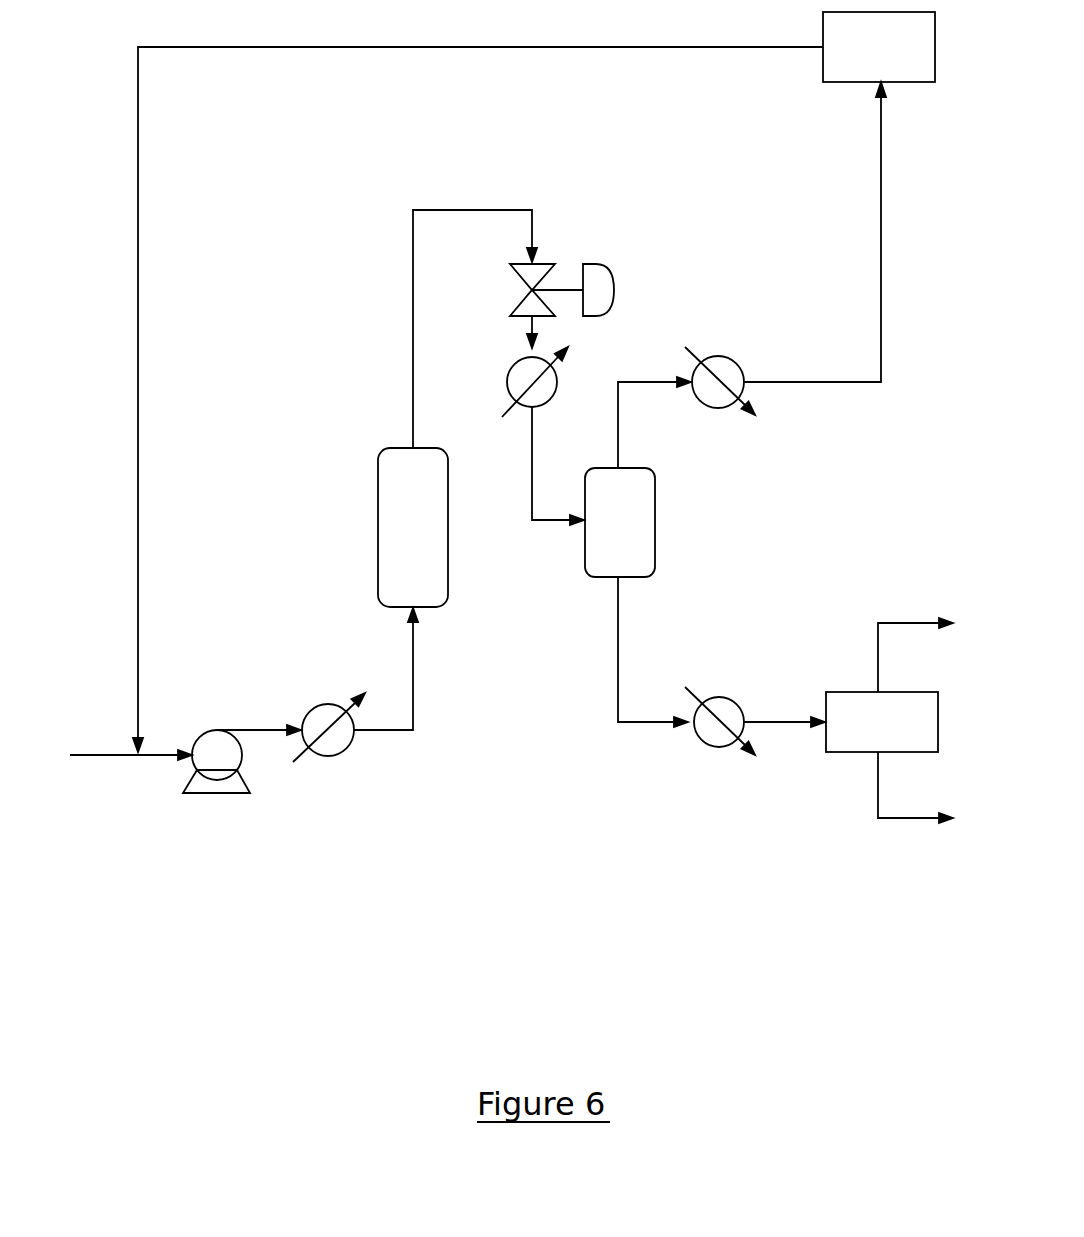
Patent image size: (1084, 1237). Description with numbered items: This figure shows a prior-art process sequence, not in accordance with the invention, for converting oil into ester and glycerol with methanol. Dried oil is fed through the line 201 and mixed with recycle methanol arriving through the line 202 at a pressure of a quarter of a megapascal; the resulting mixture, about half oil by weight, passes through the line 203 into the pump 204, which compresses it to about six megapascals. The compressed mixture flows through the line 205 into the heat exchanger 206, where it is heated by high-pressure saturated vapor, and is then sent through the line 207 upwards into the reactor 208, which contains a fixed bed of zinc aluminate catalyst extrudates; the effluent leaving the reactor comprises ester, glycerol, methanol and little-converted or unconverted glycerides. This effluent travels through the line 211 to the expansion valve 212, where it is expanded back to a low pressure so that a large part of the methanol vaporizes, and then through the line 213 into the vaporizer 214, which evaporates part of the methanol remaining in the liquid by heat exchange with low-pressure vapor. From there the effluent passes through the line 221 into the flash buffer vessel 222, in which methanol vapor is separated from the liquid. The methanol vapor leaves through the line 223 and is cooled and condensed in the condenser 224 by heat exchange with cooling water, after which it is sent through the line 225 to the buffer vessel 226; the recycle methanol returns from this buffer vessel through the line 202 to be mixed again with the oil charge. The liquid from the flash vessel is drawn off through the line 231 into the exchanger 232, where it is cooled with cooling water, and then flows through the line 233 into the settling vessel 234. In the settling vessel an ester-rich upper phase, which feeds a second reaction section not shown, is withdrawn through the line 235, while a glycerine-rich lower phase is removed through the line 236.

The line 201 is at (99, 762).
The line 202 is at (138, 415).
The line 203 is at (157, 762).
The pump 204 is at (216, 796).
The line 205 is at (263, 728).
The heat exchanger 206 is at (327, 760).
The line 207 is at (389, 736).
The reactor 208 is at (378, 557).
The line 211 is at (412, 297).
The expansion valve 212 is at (614, 290).
The line 213 is at (533, 330).
The vaporizer 214 is at (512, 412).
The line 221 is at (550, 525).
The flash buffer vessel 222 is at (655, 502).
The line 223 is at (618, 448).
The condenser 224 is at (737, 358).
The line 225 is at (880, 168).
The buffer vessel 226 is at (823, 25).
The line 231 is at (632, 722).
The exchanger 232 is at (705, 745).
The line 233 is at (770, 724).
The settling vessel 234 is at (848, 690).
The line 235 is at (900, 622).
The line 236 is at (898, 820).